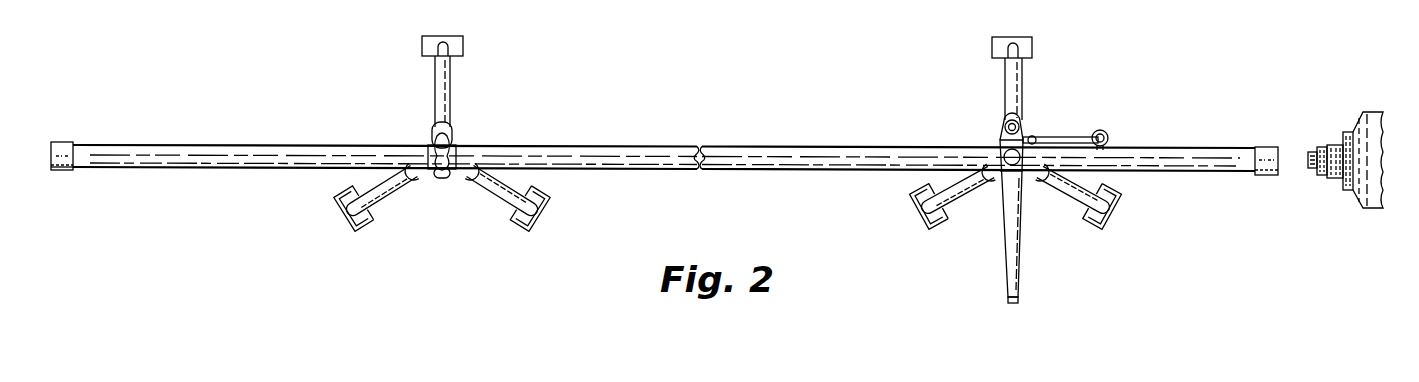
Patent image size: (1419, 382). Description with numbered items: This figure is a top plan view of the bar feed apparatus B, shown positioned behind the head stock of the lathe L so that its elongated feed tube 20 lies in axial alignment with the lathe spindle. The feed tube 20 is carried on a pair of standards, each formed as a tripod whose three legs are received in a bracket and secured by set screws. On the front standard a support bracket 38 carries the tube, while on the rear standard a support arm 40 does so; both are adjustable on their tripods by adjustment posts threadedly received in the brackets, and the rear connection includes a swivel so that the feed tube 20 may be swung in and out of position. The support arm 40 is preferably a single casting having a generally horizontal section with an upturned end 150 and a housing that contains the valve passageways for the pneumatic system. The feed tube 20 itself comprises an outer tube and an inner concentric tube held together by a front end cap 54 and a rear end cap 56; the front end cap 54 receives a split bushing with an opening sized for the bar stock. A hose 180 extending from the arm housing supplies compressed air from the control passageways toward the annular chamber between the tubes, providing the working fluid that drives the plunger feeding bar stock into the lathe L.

The feed tube 20 is at (800, 163).
The support bracket 38 is at (450, 147).
The support arm 40 is at (1005, 263).
The front end cap 54 is at (1265, 150).
The rear end cap 56 is at (65, 145).
The upturned end 150 is at (1015, 303).
The hose 180 is at (1070, 138).
The bar feed apparatus B is at (184, 168).
The lathe L is at (1364, 108).